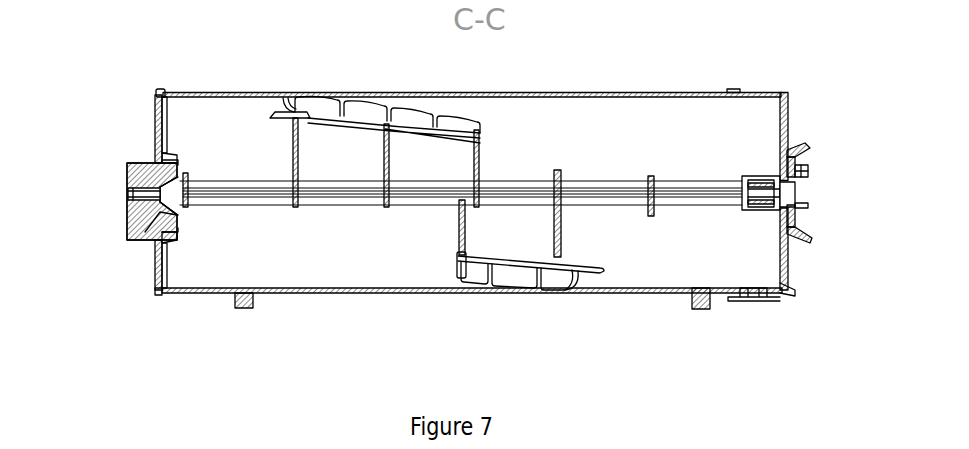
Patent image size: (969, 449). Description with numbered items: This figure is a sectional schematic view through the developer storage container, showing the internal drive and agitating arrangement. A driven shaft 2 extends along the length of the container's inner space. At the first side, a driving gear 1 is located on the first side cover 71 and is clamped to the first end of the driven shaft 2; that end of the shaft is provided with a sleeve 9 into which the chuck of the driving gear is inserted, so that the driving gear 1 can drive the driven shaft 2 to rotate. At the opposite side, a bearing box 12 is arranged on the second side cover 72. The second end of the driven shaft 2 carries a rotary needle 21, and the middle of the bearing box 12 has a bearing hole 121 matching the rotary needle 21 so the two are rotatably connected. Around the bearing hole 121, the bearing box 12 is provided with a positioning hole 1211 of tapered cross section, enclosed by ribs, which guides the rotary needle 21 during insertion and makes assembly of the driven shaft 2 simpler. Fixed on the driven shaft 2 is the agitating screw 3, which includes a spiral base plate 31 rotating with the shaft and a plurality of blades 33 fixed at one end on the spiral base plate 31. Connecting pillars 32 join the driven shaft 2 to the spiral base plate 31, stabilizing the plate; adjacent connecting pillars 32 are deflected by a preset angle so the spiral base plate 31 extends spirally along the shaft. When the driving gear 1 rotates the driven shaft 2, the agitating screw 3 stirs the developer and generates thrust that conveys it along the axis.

The second side cover 72 is at (160, 92).
The rotary needle 21 is at (127, 163).
The bearing box 12 is at (128, 228).
The bearing hole 121 is at (127, 197).
The positioning hole 1211 is at (152, 242).
The driven shaft 2 is at (576, 187).
The agitating screw 3 is at (340, 115).
The spiral base plate 31 is at (520, 268).
The blade 33 is at (556, 282).
The connecting pillar 32 is at (559, 240).
The sleeve 9 is at (757, 178).
The first side cover 71 is at (784, 133).
The driving gear 1 is at (803, 165).